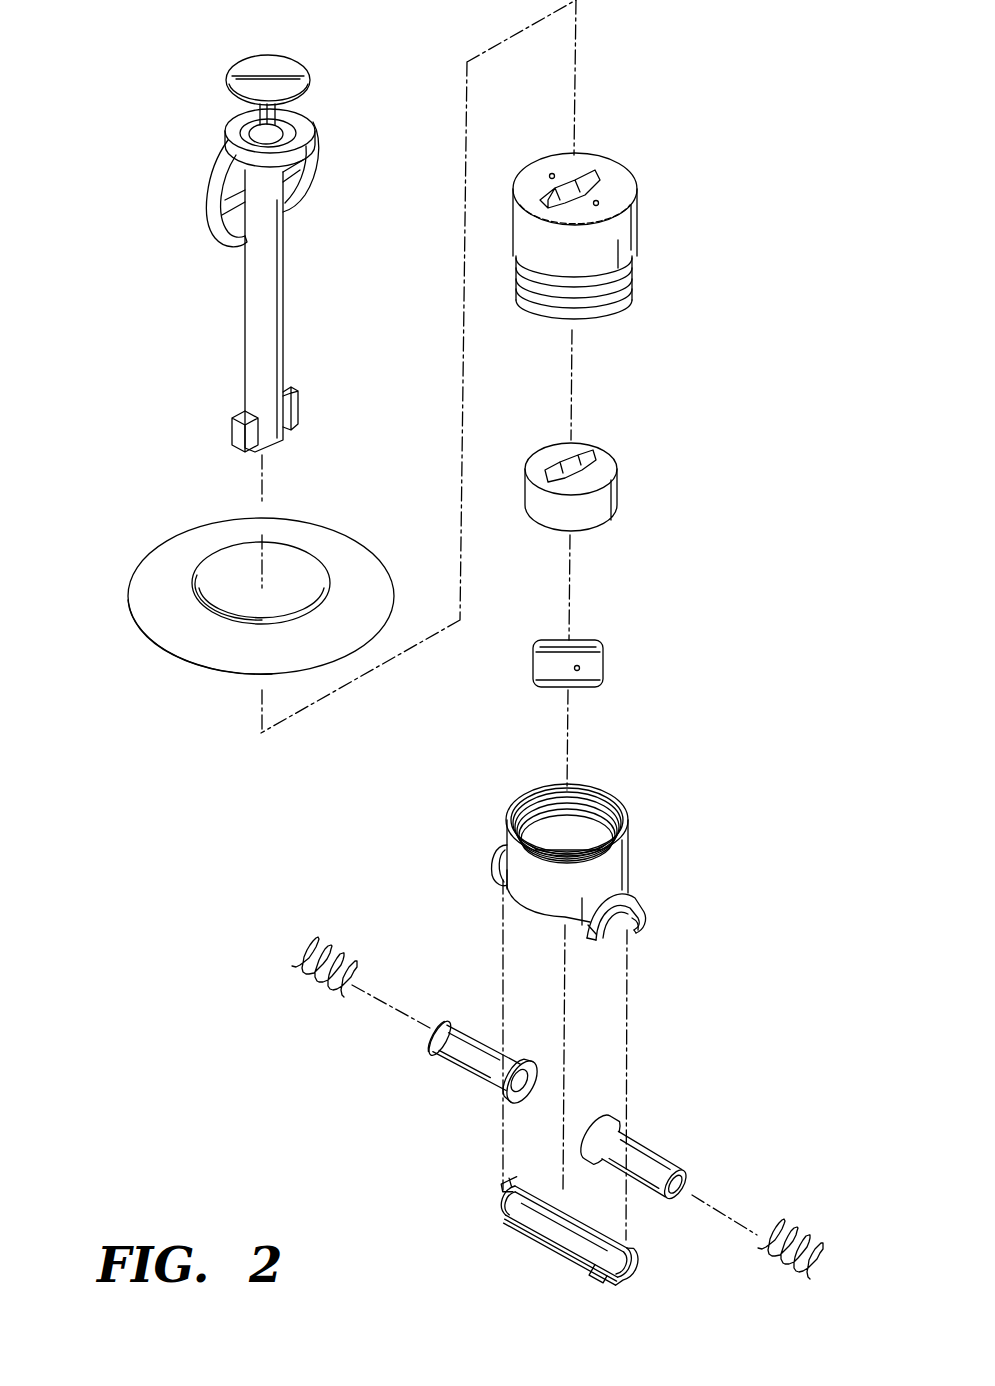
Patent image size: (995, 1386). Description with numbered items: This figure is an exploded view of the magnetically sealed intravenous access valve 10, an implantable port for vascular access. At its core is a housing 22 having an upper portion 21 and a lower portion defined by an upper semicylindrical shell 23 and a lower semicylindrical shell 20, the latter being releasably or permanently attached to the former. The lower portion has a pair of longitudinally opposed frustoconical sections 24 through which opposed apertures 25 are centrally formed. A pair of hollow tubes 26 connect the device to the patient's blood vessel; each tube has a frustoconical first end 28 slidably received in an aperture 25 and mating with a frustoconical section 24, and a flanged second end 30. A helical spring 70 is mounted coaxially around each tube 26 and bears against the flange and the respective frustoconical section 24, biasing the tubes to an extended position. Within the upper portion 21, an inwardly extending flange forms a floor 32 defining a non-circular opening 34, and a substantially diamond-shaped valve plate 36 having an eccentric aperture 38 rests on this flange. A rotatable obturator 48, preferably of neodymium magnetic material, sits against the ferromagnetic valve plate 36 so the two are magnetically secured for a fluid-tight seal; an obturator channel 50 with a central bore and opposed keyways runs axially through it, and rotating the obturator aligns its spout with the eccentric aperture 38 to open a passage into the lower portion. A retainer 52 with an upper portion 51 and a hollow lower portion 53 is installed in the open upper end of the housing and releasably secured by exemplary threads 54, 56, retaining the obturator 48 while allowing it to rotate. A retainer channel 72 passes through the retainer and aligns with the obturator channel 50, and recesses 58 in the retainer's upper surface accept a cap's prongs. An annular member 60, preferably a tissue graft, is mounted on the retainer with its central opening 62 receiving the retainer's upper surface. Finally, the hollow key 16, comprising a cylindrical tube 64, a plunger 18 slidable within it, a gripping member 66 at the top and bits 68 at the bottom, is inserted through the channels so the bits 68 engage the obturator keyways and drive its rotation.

The magnetically sealed intravenous access valve 10 is at (85, 1062).
The hollow key 16 is at (150, 200).
The plunger 18 is at (236, 64).
The lower semicylindrical shell 20 is at (537, 1248).
The upper portion 21 is at (490, 785).
The housing 22 is at (624, 847).
The upper semicylindrical shell 23 is at (492, 903).
The frustoconical section 24 is at (632, 910).
The aperture 25 is at (641, 938).
The hollow tube 26 is at (455, 1068).
The first end 28 is at (609, 1117).
The second end 30 is at (452, 1025).
The floor 32 is at (558, 842).
The opening 34 is at (572, 855).
The valve plate 36 is at (604, 668).
The eccentric aperture 38 is at (579, 665).
The rotatable obturator 48 is at (612, 492).
The obturator channel 50 is at (586, 458).
The upper portion of the retainer 51 is at (656, 152).
The retainer 52 is at (638, 227).
The hollow lower portion of the retainer 53 is at (652, 327).
The threads 54 is at (608, 818).
The threads 56 is at (628, 294).
The recesses 58 is at (551, 173).
The annular member 60 is at (353, 540).
The central opening 62 is at (281, 574).
The cylindrical tube 64 is at (248, 329).
The gripping member 66 is at (302, 199).
The bits 68 is at (232, 430).
The helical spring 70 is at (303, 985).
The retainer channel 72 is at (582, 172).